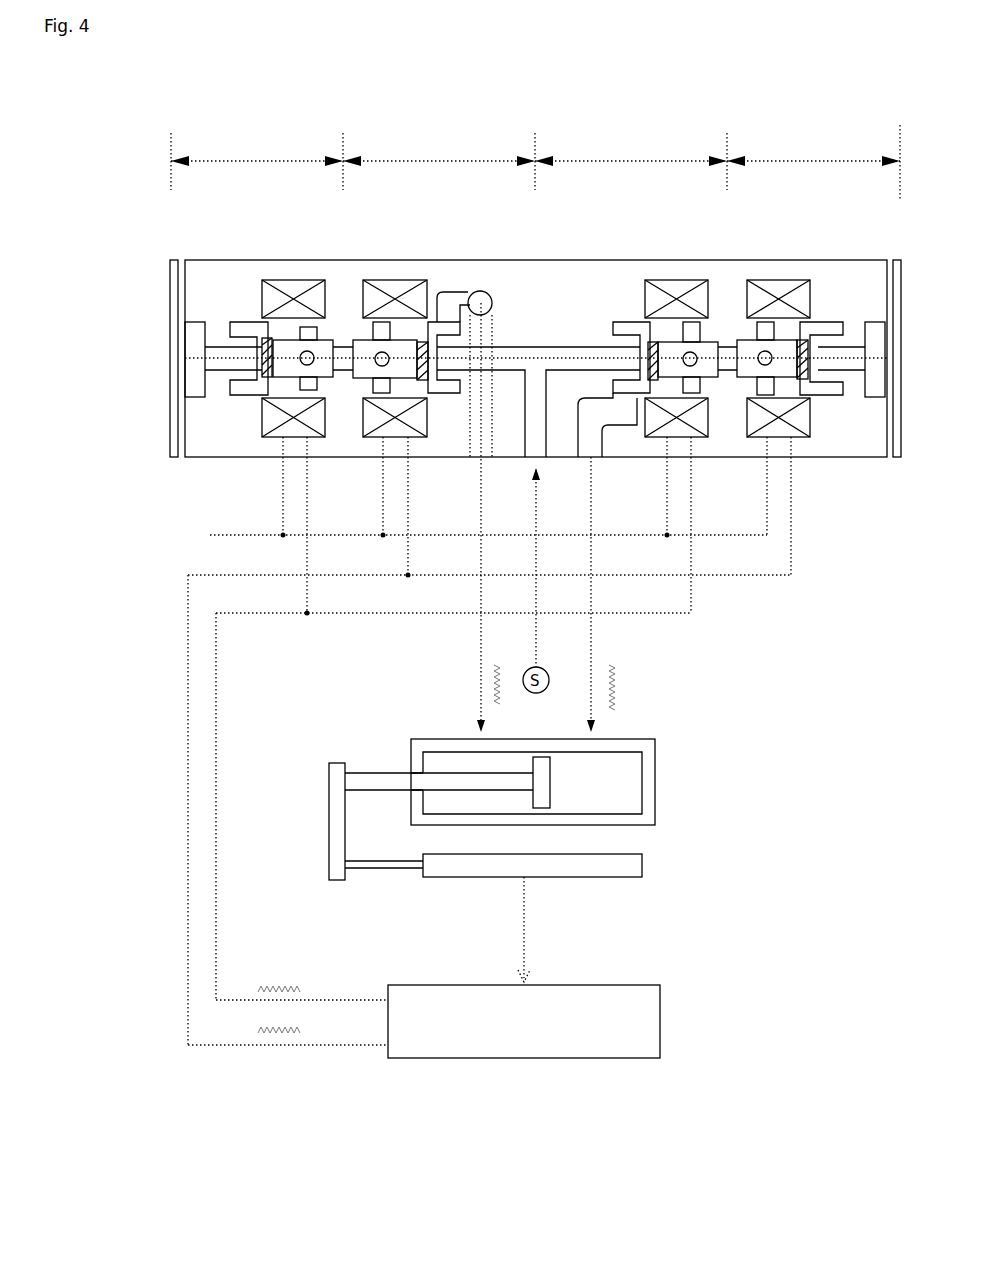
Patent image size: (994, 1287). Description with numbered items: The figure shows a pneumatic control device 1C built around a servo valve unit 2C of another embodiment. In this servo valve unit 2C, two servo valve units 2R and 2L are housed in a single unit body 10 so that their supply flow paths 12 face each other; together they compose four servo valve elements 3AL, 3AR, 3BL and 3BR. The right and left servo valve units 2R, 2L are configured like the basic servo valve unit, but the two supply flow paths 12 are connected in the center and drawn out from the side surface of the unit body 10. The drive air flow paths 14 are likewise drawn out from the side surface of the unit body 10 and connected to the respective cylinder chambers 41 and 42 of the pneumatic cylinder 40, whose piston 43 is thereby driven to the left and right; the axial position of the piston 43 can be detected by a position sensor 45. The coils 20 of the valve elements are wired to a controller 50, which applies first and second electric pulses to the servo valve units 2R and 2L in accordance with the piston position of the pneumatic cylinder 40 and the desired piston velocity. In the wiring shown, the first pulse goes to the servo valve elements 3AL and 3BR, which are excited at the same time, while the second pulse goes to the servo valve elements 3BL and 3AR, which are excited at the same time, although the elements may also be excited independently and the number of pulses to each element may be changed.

The pneumatic control device 1C is at (888, 86).
The servo valve element 3BL is at (258, 138).
The servo valve element 3AL is at (441, 138).
The servo valve element 3AR is at (628, 138).
The servo valve element 3BR is at (811, 138).
The unit body 10 is at (238, 458).
The servo valve unit 2C is at (828, 468).
The supply port (supply flow path) 12 is at (512, 347).
The coil 20 is at (291, 273).
The servo valve unit 2L is at (332, 272).
The servo valve unit 2R is at (758, 272).
The drive air port (drive air flow path) 14 is at (456, 291).
The pneumatic cylinder 40 is at (546, 789).
The cylinder chamber 41 is at (619, 768).
The cylinder chamber 42 is at (445, 764).
The piston 43 is at (545, 795).
The position sensor 45 is at (645, 866).
The controller 50 is at (524, 1062).